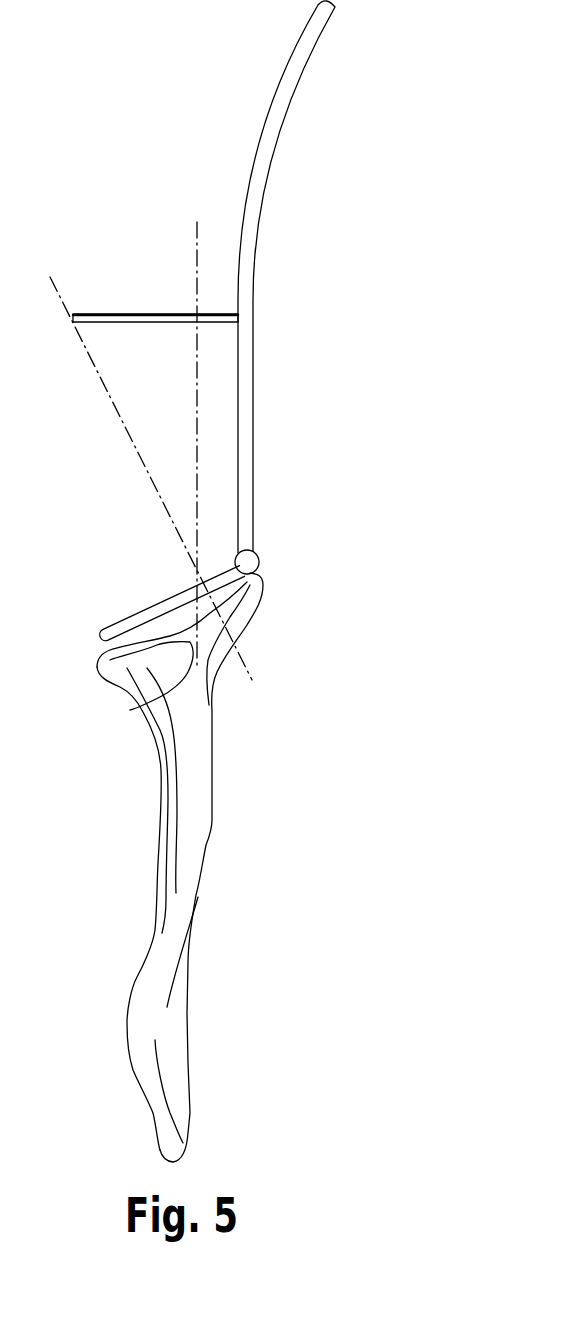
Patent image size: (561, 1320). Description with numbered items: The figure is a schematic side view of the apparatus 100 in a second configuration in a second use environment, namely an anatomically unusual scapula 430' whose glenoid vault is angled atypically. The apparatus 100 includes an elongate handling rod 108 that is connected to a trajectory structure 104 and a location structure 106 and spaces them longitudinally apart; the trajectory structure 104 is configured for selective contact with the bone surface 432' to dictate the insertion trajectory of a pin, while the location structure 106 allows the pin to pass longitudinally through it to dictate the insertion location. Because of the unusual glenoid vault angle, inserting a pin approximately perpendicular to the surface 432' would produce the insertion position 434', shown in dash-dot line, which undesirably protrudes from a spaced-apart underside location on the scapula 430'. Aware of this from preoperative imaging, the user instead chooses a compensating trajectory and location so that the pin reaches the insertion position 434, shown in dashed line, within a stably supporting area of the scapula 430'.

The apparatus 100 is at (298, 205).
The trajectory structure 104 is at (111, 592).
The location structure 106 is at (100, 289).
The elongate handling rod 108 is at (272, 100).
The scapula 430' is at (205, 867).
The surface 432' is at (135, 700).
The insertion position 434 is at (259, 444).
The insertion position 434' is at (141, 478).